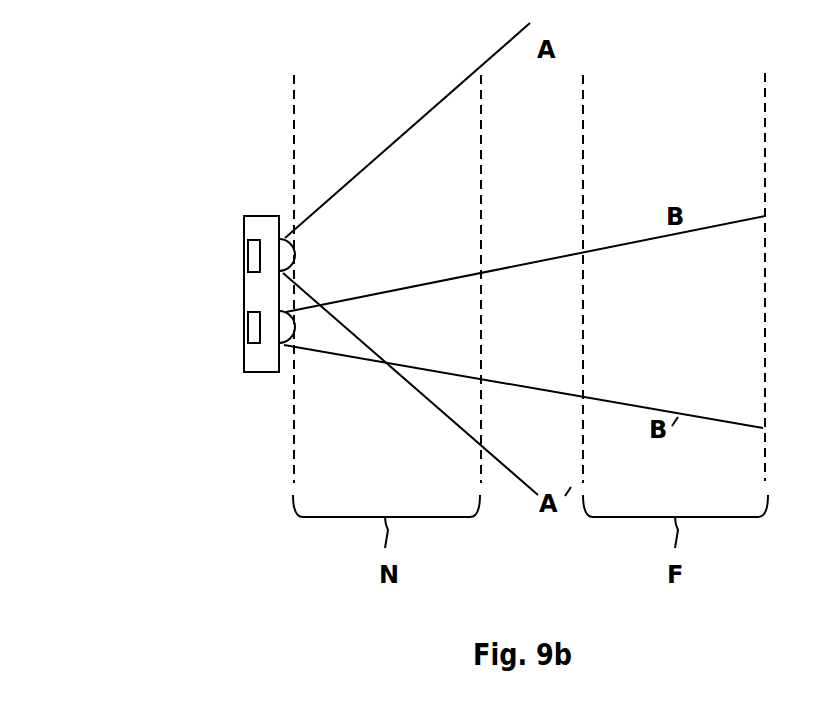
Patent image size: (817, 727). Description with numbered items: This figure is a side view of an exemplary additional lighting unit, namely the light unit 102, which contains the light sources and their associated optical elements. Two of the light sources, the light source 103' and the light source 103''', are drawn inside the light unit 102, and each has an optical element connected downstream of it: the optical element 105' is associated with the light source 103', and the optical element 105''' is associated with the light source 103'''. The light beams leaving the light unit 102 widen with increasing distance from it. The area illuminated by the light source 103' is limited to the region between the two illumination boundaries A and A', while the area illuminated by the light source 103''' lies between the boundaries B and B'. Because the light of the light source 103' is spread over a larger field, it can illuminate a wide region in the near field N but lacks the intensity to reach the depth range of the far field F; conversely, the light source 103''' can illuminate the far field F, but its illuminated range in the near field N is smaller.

The light unit 102 is at (243, 200).
The light source 103' is at (191, 254).
The light source 103''' is at (175, 320).
The optical element 105' is at (266, 168).
The optical element 105''' is at (246, 430).